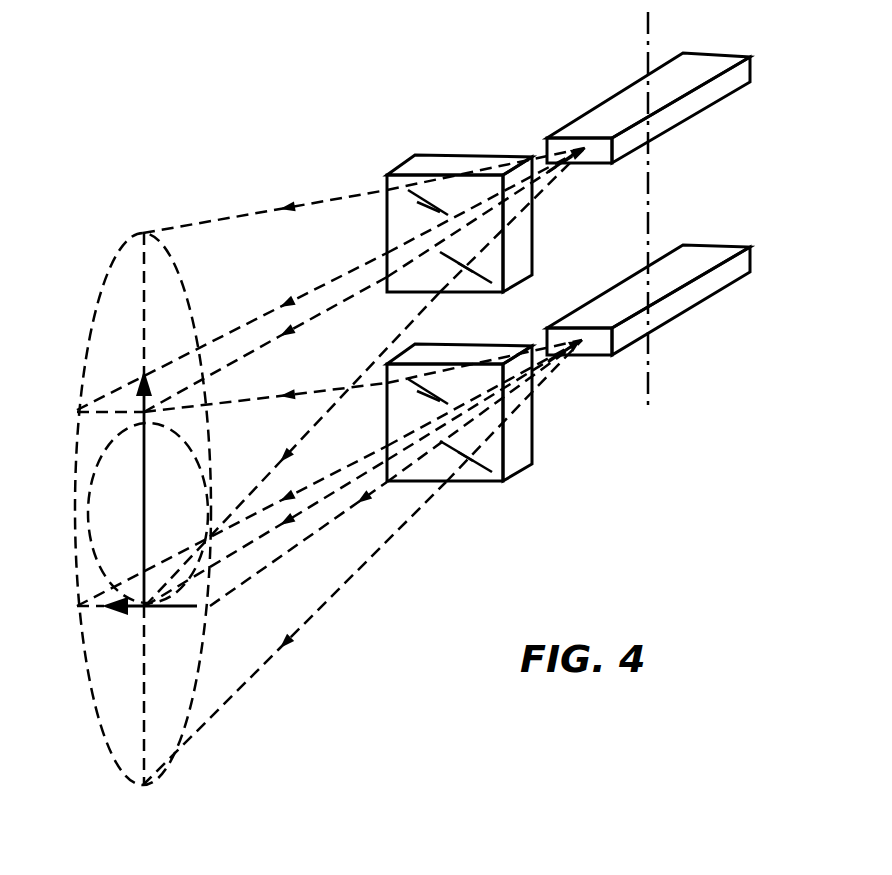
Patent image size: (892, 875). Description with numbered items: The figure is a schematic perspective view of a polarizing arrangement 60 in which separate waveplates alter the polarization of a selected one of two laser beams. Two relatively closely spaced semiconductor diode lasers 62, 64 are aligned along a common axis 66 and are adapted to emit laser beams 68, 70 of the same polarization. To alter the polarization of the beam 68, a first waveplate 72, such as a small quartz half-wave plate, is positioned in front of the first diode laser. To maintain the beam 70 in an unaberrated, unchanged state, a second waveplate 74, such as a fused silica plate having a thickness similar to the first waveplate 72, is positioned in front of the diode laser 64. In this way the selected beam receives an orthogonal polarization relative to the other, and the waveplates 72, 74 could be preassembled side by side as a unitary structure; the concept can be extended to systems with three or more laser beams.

The polarizing arrangement 60 is at (527, 62).
The semiconductor diode laser 62 is at (706, 60).
The semiconductor diode laser 64 is at (706, 300).
The common axis 66 is at (650, 395).
The laser beam 68 is at (570, 186).
The laser beam 70 is at (565, 377).
The first waveplate 72 is at (440, 158).
The second waveplate 74 is at (476, 483).